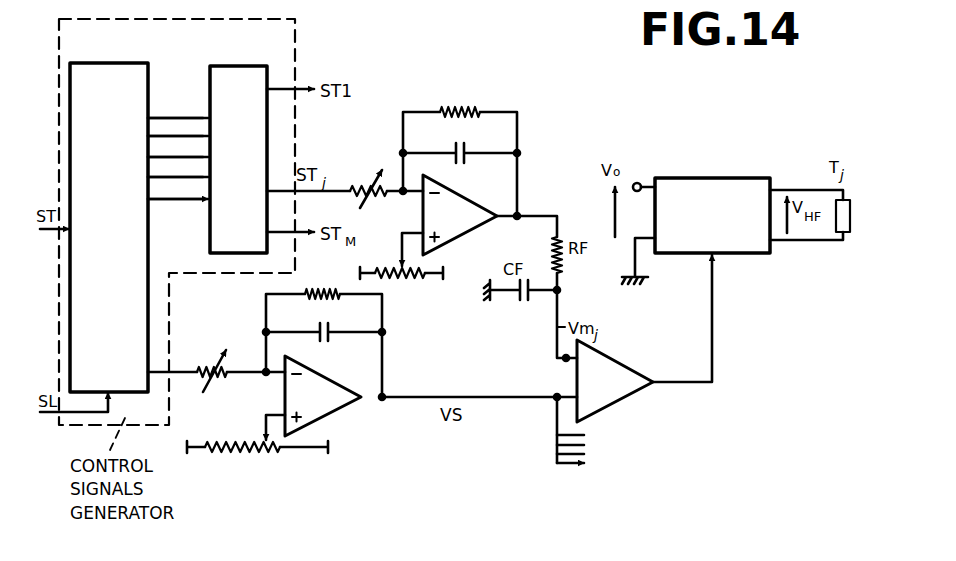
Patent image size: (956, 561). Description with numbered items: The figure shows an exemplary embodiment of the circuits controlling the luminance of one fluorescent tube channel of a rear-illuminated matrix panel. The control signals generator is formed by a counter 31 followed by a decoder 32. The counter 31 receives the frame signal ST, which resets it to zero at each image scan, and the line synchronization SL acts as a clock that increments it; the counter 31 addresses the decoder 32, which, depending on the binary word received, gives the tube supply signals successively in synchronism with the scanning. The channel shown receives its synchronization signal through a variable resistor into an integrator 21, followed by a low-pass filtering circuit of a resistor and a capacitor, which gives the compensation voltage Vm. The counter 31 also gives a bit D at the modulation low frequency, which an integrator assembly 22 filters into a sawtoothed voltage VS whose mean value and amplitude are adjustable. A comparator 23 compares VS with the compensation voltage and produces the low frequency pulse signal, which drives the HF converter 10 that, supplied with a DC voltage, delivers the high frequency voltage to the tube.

The HF converter 10 is at (712, 202).
The integrator 21 is at (428, 181).
The slope generator 22 is at (266, 373).
The comparator 23 is at (637, 347).
The counter 31 is at (104, 63).
The decoder 32 is at (218, 66).